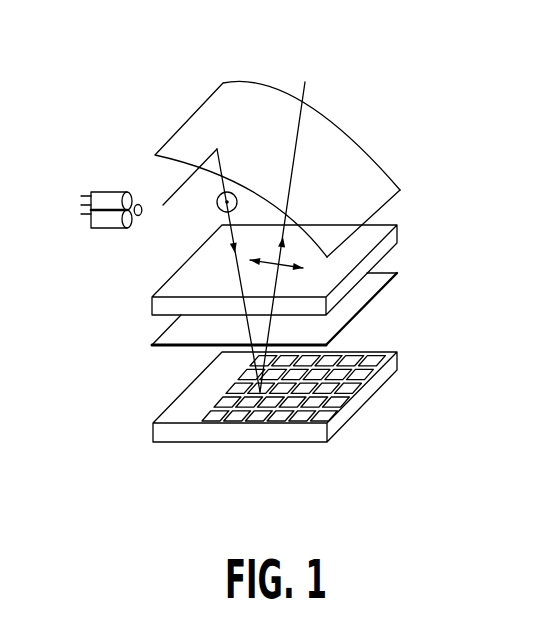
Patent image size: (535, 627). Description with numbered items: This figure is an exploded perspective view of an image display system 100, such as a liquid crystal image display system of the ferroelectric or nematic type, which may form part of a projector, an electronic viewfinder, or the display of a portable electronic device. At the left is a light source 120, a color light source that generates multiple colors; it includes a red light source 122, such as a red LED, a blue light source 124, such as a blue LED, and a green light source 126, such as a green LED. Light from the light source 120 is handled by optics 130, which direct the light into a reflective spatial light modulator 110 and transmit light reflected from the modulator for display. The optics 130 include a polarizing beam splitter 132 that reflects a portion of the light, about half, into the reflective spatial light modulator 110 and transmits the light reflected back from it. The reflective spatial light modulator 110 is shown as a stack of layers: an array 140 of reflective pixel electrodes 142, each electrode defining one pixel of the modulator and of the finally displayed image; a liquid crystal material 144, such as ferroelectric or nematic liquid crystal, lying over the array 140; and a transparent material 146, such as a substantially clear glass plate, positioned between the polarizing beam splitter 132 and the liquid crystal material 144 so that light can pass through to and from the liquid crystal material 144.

The image display system 100 is at (370, 87).
The reflective spatial light modulator 110 is at (423, 223).
The light source 120 is at (67, 188).
The red light source 122 is at (105, 191).
The blue light source 124 is at (140, 204).
The green light source 126 is at (108, 229).
The optics 130 is at (207, 100).
The polarizing beam splitter 132 is at (363, 180).
The array 140 is at (166, 410).
The reflective pixel electrodes 142 is at (258, 390).
The liquid crystal material 144 is at (165, 332).
The transparent material 146 is at (170, 279).